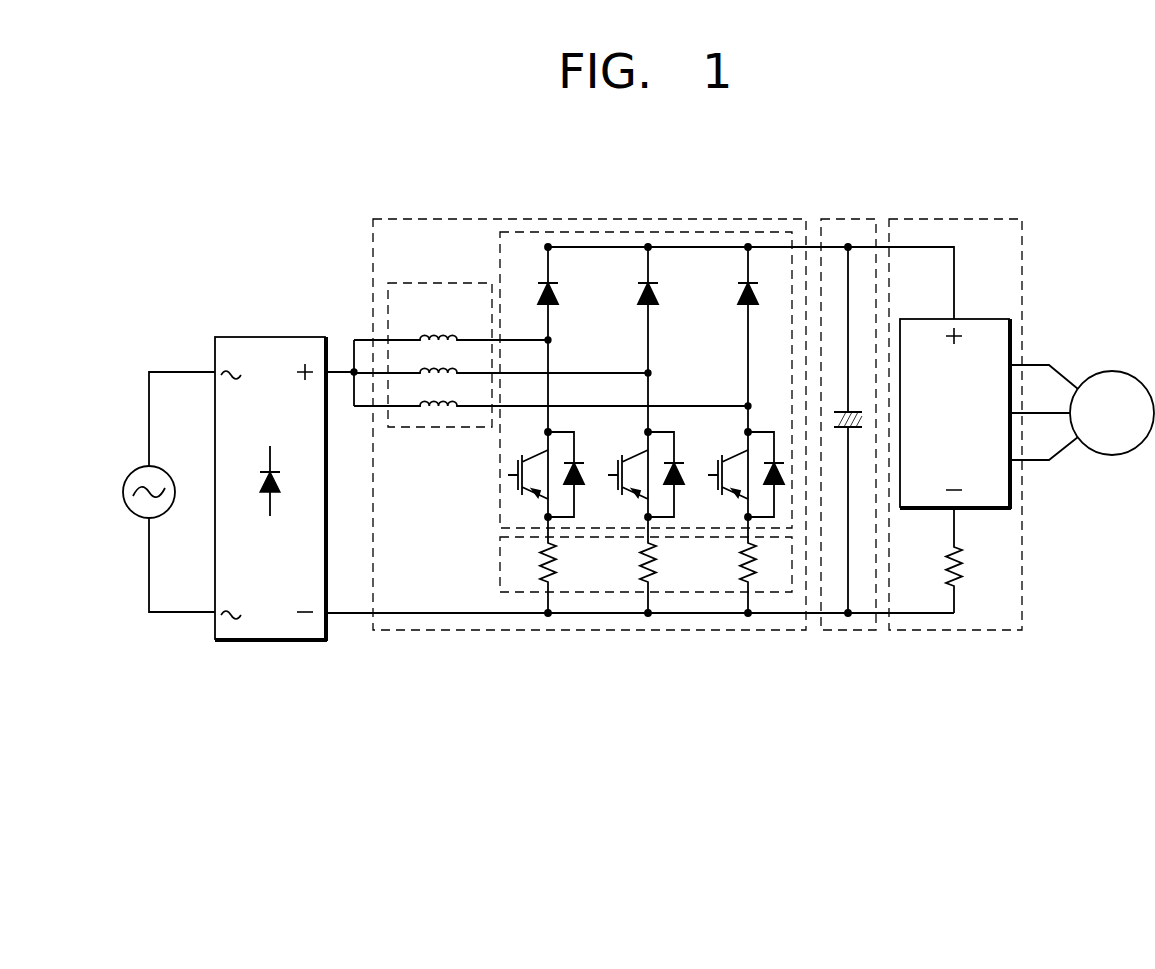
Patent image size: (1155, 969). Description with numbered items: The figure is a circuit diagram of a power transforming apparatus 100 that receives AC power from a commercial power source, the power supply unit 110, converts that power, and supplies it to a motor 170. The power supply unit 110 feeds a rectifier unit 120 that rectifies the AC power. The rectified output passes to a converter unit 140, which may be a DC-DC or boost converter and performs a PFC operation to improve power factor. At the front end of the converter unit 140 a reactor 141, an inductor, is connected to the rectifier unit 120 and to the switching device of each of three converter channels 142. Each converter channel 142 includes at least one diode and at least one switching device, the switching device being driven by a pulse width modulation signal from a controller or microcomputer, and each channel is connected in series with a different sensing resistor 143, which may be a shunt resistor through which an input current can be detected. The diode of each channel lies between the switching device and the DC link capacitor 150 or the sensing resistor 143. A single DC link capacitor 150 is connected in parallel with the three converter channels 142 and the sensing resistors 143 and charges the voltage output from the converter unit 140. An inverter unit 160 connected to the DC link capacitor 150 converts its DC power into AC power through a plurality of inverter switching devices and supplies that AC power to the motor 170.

The power transforming apparatus 100 is at (227, 216).
The power supply unit 110 is at (130, 473).
The rectifier unit 120 is at (268, 337).
The converter unit 140 is at (645, 219).
The reactor 141 is at (437, 283).
The converter channels 142 is at (500, 468).
The sensing resistors 143 is at (500, 562).
The DC link capacitor 150 is at (848, 219).
The inverter unit 160 is at (954, 219).
The motor 170 is at (1112, 371).